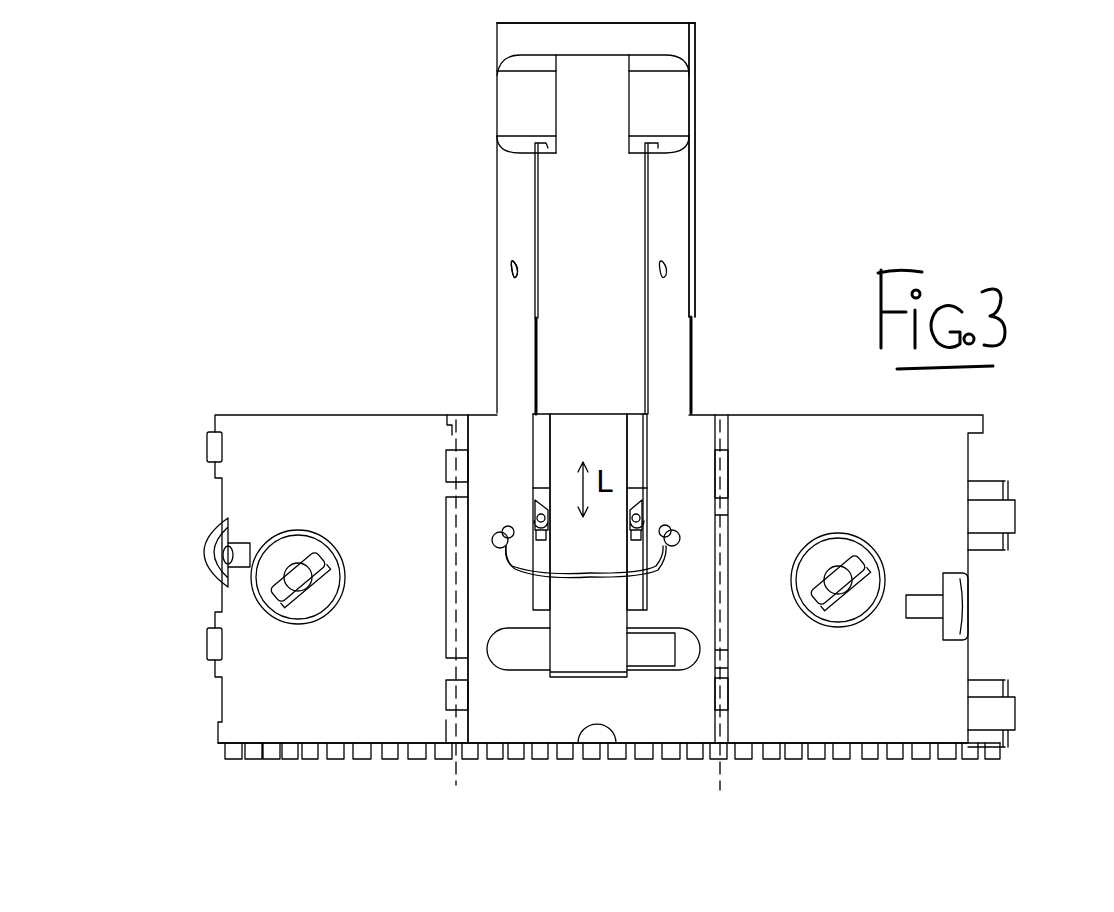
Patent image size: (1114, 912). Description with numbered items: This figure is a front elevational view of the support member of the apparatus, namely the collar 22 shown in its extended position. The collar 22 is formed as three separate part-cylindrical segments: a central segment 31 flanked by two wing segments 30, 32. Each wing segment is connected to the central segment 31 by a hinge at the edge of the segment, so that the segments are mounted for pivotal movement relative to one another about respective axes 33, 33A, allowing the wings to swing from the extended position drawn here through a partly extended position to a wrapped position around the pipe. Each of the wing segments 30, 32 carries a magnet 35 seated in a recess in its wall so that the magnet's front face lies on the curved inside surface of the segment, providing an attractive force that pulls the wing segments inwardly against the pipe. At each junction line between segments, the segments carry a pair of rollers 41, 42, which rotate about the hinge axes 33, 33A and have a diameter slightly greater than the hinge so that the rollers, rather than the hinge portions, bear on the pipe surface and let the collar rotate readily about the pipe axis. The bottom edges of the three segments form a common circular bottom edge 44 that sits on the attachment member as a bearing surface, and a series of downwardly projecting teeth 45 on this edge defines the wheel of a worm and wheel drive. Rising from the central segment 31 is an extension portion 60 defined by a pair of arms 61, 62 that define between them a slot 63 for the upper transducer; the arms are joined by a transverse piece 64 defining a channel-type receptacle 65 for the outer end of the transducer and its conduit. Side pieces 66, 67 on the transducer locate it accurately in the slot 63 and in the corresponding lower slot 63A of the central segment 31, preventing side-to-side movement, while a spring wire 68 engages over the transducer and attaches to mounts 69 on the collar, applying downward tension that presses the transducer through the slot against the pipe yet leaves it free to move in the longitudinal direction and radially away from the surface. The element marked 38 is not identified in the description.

The collar 22 is at (738, 337).
The wing segment 30 is at (303, 430).
The central segment 31 is at (487, 440).
The wing segment 32 is at (805, 440).
The axis 33 is at (455, 400).
The axis 33A is at (728, 398).
The magnet 35 is at (845, 545).
The wing nut 38 is at (868, 548).
The roller 41 is at (210, 430).
The roller 42 is at (223, 645).
The bottom edge 44 is at (616, 760).
The teeth 45 is at (308, 760).
The extension portion 60 is at (502, 178).
The arm 61 is at (497, 235).
The arm 62 is at (692, 214).
The slot 63 is at (538, 333).
The lower slot 63A is at (637, 414).
The transverse piece 64 is at (690, 35).
The channel-type receptacle 65 is at (660, 65).
The side piece 66 is at (540, 500).
The side piece 67 is at (637, 500).
The spring wire 68 is at (598, 562).
The mounts 69 is at (490, 550).